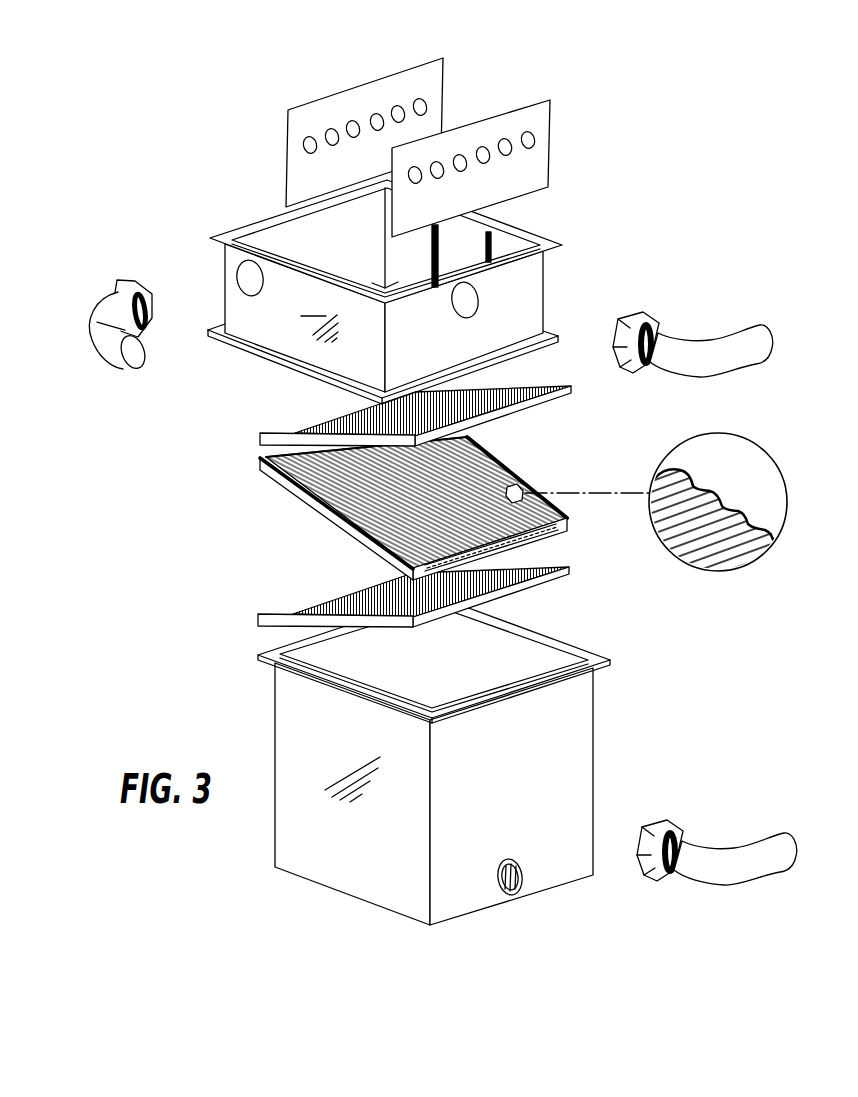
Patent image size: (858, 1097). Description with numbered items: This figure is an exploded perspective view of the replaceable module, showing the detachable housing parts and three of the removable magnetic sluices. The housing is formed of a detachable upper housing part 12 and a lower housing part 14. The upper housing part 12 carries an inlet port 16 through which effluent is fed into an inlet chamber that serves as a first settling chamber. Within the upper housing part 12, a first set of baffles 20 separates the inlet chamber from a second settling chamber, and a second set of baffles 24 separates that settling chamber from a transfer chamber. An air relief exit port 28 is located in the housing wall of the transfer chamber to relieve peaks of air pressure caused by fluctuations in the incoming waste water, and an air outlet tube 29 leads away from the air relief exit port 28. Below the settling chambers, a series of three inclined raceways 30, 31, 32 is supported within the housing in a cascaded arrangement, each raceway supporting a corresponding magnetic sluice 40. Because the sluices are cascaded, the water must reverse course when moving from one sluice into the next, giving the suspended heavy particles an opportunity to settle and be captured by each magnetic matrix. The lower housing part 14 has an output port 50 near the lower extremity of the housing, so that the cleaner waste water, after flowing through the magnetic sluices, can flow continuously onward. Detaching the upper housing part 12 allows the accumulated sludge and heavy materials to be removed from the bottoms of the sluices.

The upper housing part 12 is at (523, 293).
The lower housing part 14 is at (522, 745).
The inlet port 16 is at (125, 280).
The first set of baffles 20 is at (422, 130).
The second set of baffles 24 is at (523, 122).
The air relief exit port 28 is at (455, 312).
The air outlet tube 29 is at (700, 352).
The inclined raceway 30 is at (533, 380).
The inclined raceway 31 is at (326, 514).
The inclined raceway 32 is at (267, 623).
The magnetic sluice 40 is at (315, 483).
The output port 50 is at (717, 865).